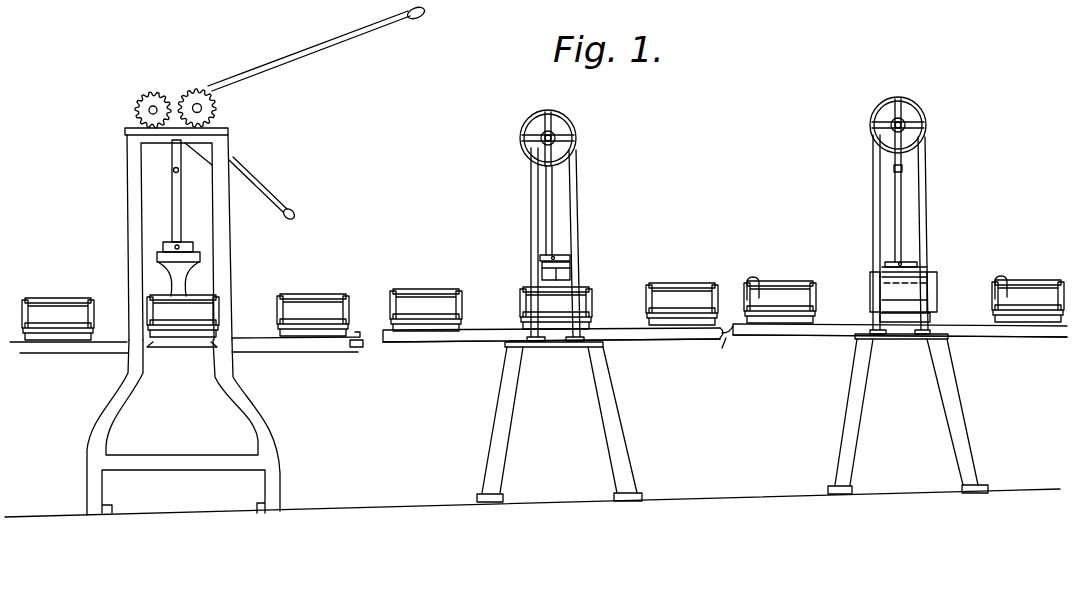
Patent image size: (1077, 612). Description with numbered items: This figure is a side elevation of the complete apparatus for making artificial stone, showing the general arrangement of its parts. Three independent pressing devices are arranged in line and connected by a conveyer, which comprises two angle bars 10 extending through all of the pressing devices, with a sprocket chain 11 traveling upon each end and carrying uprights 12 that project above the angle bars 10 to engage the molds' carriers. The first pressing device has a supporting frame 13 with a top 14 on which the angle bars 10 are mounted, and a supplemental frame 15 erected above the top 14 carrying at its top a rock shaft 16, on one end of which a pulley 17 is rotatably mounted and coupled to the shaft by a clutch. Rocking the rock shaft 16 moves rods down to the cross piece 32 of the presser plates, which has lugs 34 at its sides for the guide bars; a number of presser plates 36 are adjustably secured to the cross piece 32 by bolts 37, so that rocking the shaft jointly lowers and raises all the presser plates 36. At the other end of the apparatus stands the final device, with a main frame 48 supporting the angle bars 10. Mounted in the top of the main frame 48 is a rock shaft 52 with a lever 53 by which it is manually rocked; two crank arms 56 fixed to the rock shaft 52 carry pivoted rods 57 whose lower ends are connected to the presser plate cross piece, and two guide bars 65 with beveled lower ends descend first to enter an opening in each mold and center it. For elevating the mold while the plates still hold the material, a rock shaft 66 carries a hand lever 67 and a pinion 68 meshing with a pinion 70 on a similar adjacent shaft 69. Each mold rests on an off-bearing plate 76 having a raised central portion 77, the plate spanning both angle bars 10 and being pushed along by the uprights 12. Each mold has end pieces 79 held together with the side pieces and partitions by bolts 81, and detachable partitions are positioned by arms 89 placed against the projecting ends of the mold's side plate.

The angle bars 10 is at (421, 342).
The sprocket chain 11 is at (723, 345).
The uprights 12 is at (460, 328).
The supporting frame 13 is at (603, 414).
The top 14 is at (558, 345).
The supplemental frame 15 is at (576, 232).
The rock shaft 16 is at (560, 136).
The pulley 17 is at (558, 115).
The cross piece 32 is at (573, 259).
The lugs 34 is at (545, 265).
The presser plates 36 is at (560, 280).
The bolts 37 is at (915, 263).
The main frame 48 is at (240, 403).
The rock shaft 52 is at (172, 131).
The lever 53 is at (246, 186).
The crank arms 56 is at (178, 163).
The rods 57 is at (185, 246).
The guide bars 65 is at (173, 276).
The rock shaft 66 is at (138, 112).
The hand lever 67 is at (302, 50).
The pinion 68 is at (150, 97).
The shaft 69 is at (205, 108).
The pinion 70 is at (198, 92).
The off-bearing plate 76 is at (676, 332).
The raised central portion 77 is at (645, 313).
The end pieces 79 is at (497, 309).
The bolts 81 is at (391, 313).
The arms 89 is at (757, 297).